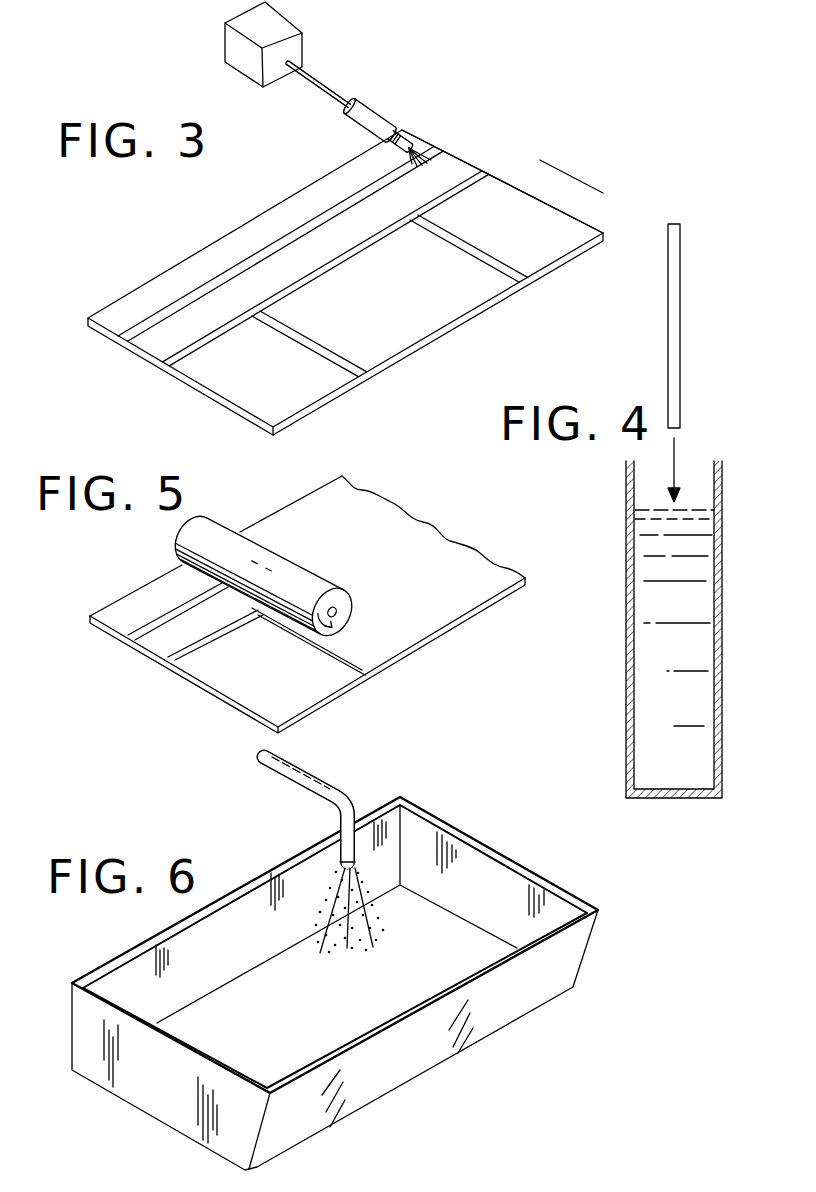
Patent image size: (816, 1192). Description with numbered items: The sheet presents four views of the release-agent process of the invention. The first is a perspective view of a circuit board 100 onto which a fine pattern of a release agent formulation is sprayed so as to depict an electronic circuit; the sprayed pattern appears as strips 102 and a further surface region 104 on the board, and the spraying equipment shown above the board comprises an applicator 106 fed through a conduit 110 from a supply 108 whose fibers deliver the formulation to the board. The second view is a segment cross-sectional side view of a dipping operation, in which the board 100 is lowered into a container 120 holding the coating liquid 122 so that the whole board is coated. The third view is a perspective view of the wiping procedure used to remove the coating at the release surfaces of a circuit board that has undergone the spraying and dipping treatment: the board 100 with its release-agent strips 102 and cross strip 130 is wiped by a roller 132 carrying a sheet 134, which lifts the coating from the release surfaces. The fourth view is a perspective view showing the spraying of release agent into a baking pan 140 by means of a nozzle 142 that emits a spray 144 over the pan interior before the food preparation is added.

In FIG. 3, the sheet substrate 100 is at (512, 302).
In FIG. 4, the sheet substrate 100 is at (684, 338).
In FIG. 5, the sheet substrate 100 is at (424, 653).
In FIG. 3, the strip 102 is at (477, 175).
In FIG. 5, the strip 102 is at (157, 620).
In FIG. 3, the surface region 104 is at (557, 217).
In FIG. 3, the applicator 106 is at (375, 115).
In FIG. 3, the supply and applicator bundle 108 is at (287, 25).
In FIG. 3, the conduit 110 is at (328, 90).
In FIG. 4, the container 120 is at (628, 584).
In FIG. 4, the liquid 122 is at (655, 544).
In FIG. 5, the cross strip 130 is at (297, 690).
In FIG. 5, the roller 132 is at (263, 574).
In FIG. 5, the sheet 134 is at (428, 533).
In FIG. 6, the tank 140 is at (528, 866).
In FIG. 6, the nozzle 142 is at (343, 833).
In FIG. 6, the spray 144 is at (370, 908).